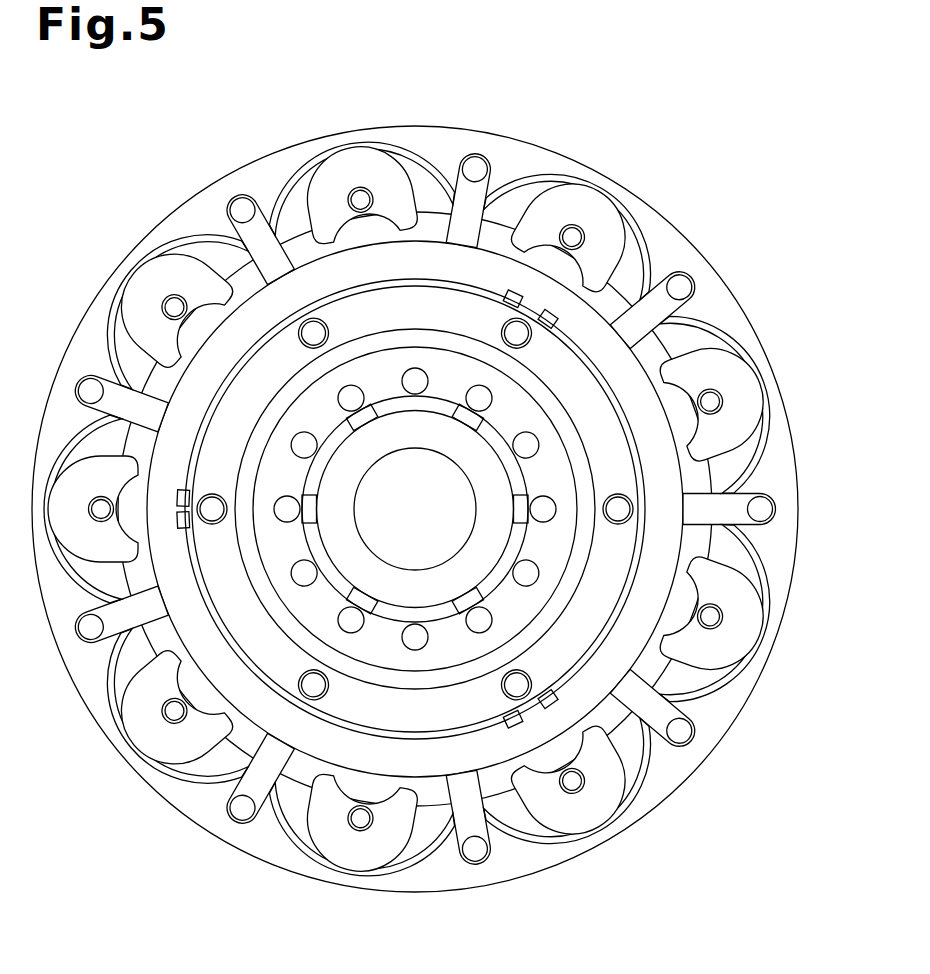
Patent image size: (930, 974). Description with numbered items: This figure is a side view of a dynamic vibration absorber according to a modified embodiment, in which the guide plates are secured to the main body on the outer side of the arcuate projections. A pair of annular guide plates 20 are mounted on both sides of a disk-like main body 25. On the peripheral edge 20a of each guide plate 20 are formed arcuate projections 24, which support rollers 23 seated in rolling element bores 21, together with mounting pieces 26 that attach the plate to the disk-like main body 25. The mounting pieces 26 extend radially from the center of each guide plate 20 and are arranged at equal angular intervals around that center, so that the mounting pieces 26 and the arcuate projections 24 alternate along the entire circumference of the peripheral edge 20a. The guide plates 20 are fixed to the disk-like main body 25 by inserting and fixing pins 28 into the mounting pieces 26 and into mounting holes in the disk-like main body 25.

The annular guide plate 20 is at (612, 340).
The peripheral edge 20a is at (627, 287).
The rolling element bore 21 is at (515, 188).
The roller 23 is at (603, 193).
The arcuate projection 24 is at (583, 262).
The disk-like main body 25 is at (660, 206).
The mounting piece 26 is at (478, 156).
The pin 28 is at (692, 287).